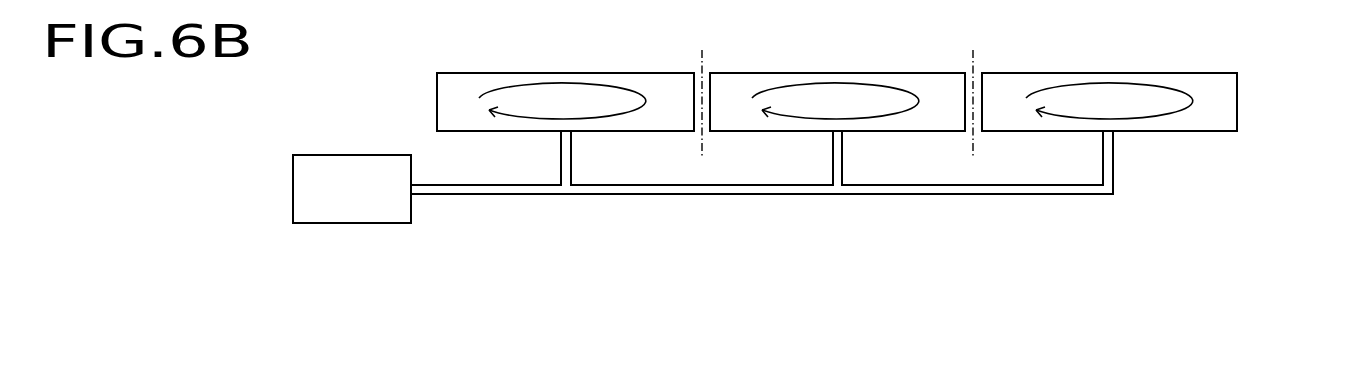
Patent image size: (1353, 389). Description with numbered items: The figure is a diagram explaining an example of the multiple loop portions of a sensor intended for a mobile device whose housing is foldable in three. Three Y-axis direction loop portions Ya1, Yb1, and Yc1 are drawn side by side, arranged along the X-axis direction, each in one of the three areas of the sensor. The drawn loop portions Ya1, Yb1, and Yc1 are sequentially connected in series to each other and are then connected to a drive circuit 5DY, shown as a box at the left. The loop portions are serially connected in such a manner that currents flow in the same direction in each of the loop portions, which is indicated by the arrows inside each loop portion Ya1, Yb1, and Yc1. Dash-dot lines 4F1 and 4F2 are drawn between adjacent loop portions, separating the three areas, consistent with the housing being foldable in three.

The drive circuit 5DY is at (333, 153).
The loop portion Ya1 is at (509, 72).
The loop portion Yb1 is at (853, 72).
The loop portion Yc1 is at (1078, 72).
The first boundary (fold line) 4F1 is at (703, 52).
The second boundary (fold line) 4F2 is at (974, 52).